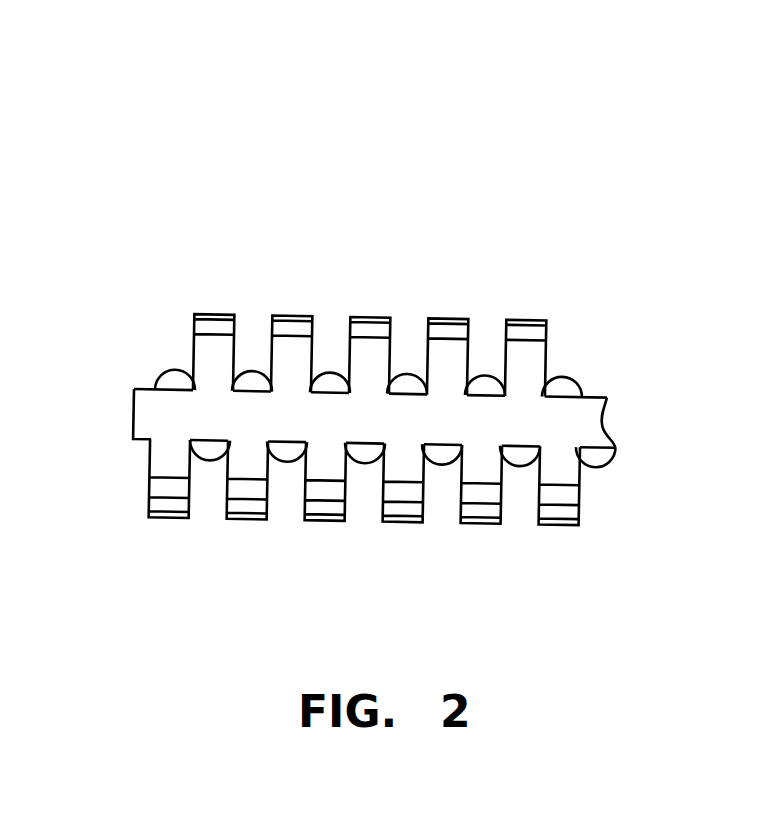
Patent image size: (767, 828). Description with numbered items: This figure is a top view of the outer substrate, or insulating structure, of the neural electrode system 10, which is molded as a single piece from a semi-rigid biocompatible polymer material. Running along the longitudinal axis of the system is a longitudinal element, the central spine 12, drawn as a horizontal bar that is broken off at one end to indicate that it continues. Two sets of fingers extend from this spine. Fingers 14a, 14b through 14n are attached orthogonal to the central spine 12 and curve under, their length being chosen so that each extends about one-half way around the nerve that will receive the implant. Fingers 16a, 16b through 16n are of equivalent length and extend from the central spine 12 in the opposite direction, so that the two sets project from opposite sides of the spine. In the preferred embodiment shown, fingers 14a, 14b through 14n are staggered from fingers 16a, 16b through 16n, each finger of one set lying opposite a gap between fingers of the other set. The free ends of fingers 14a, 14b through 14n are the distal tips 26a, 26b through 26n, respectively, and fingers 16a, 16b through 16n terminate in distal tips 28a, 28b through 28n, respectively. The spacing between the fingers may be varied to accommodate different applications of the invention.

The electrode system 10 is at (507, 115).
The central spine 12 is at (145, 417).
The finger 14a is at (170, 518).
The finger 14b is at (258, 519).
The finger 14n is at (670, 477).
The finger 16a is at (215, 313).
The finger 16b is at (293, 316).
The finger 16n is at (523, 320).
The distal tip 26a is at (177, 369).
The distal tip 26b is at (252, 370).
The distal tip 26n is at (575, 379).
The distal tip 28a is at (213, 460).
The distal tip 28b is at (288, 460).
The distal tip 28n is at (594, 467).